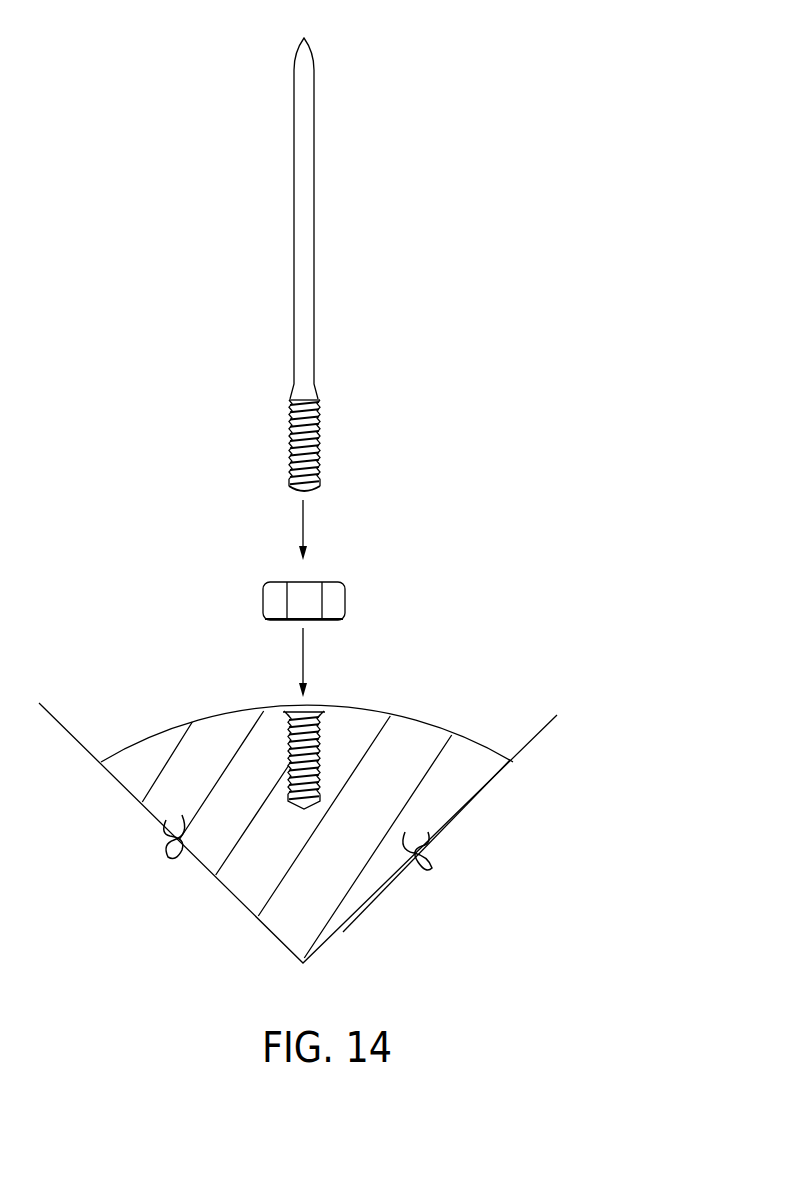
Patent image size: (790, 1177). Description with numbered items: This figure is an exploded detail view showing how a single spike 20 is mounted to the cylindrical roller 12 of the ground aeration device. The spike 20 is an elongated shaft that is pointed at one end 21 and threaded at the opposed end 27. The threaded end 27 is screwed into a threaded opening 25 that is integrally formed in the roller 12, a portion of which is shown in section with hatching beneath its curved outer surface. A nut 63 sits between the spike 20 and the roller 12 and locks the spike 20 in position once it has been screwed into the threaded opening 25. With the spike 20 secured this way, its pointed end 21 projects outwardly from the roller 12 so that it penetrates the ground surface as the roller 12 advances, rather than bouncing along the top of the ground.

The cylindrical roller 12 is at (212, 735).
The spike 20 is at (304, 262).
The pointed end 21 is at (318, 37).
The threaded opening 25 is at (325, 700).
The threaded end 27 is at (332, 445).
The nut 63 is at (331, 602).